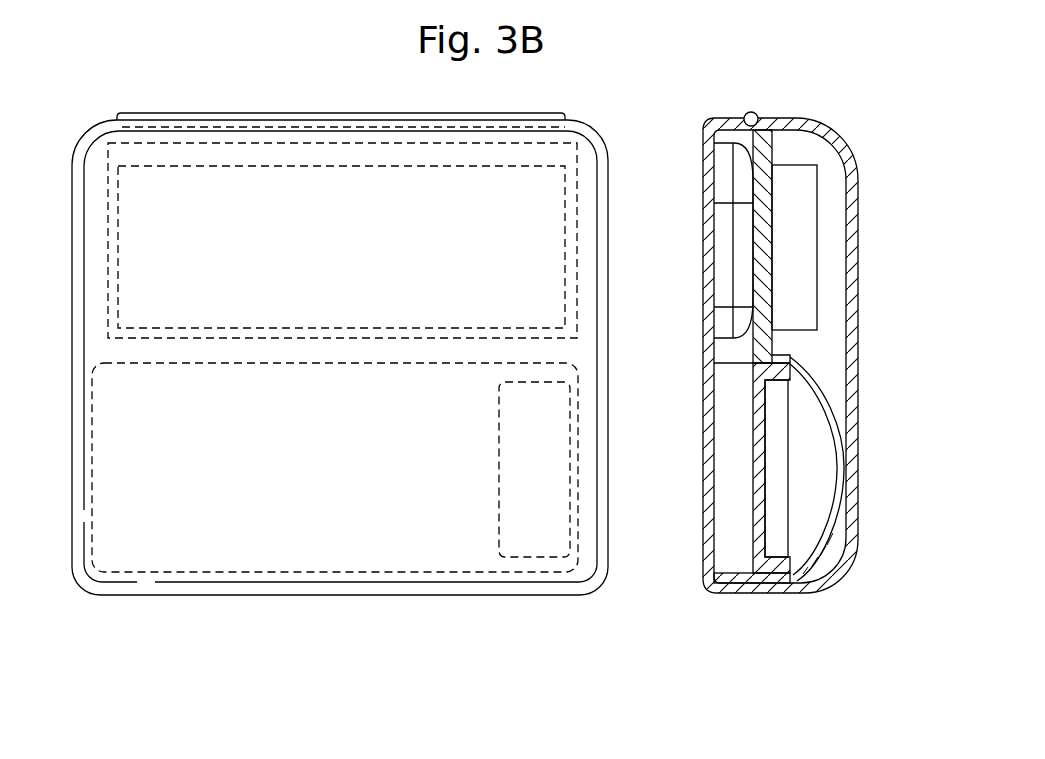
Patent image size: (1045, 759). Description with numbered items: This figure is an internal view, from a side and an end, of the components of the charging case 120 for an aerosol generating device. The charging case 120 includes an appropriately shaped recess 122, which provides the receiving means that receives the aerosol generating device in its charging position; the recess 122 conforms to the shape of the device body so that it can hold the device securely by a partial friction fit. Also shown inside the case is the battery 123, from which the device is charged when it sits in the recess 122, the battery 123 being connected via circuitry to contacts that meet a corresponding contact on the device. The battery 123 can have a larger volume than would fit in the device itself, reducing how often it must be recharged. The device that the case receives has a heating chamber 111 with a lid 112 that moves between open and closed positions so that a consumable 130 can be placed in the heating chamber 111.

The charging case 120 is at (140, 624).
The recess 122 is at (408, 570).
The battery 123 is at (535, 215).
The lid 112 is at (207, 550).
The heating chamber 111 is at (548, 437).
The consumable 130 is at (750, 203).